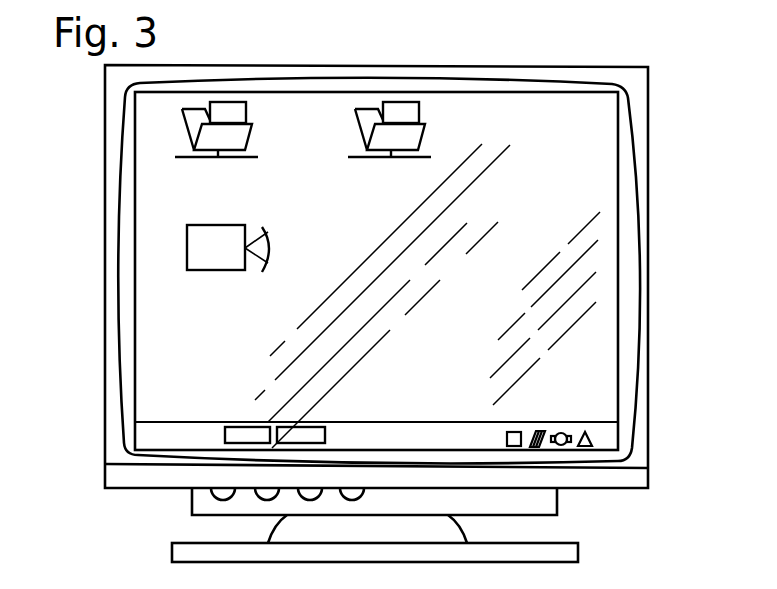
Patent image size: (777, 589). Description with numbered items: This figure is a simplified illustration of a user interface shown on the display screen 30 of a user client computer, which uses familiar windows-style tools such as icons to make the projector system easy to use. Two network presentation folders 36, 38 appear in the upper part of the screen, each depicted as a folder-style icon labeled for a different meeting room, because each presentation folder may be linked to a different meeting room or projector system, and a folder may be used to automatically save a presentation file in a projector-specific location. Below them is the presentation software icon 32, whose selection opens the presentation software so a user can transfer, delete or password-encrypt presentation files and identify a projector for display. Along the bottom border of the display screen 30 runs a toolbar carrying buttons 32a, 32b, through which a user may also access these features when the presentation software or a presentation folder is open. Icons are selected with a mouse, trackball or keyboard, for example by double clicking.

The display screen 30 is at (700, 114).
The presentation software icon 32 is at (272, 248).
The button 32a is at (243, 428).
The button 32b is at (309, 432).
The network presentation folder 36 is at (252, 136).
The network presentation folder 38 is at (425, 137).